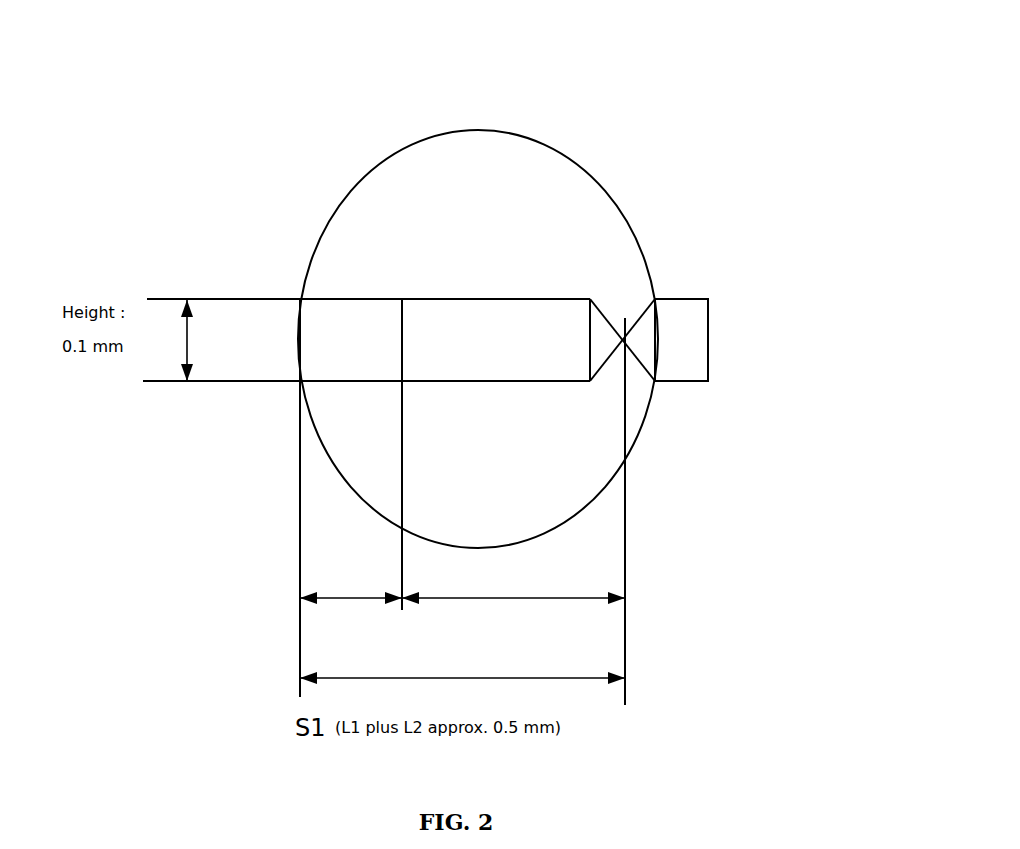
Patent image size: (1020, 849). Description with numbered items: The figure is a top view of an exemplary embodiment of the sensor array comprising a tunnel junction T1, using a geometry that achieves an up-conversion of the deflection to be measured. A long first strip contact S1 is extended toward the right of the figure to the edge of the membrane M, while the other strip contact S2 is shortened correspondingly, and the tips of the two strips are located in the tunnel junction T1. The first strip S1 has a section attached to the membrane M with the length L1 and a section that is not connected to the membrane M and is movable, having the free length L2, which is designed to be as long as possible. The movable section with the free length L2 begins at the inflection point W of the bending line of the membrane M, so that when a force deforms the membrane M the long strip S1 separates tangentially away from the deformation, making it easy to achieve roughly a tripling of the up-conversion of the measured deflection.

The first strip S1 is at (511, 290).
The second strip S2 is at (704, 345).
The membrane M is at (305, 241).
The inflection point of the bending line of the membrane W is at (402, 285).
The tunnel junction T1 is at (624, 305).
The length of the attached section L1 is at (354, 633).
The free length L2 is at (513, 619).